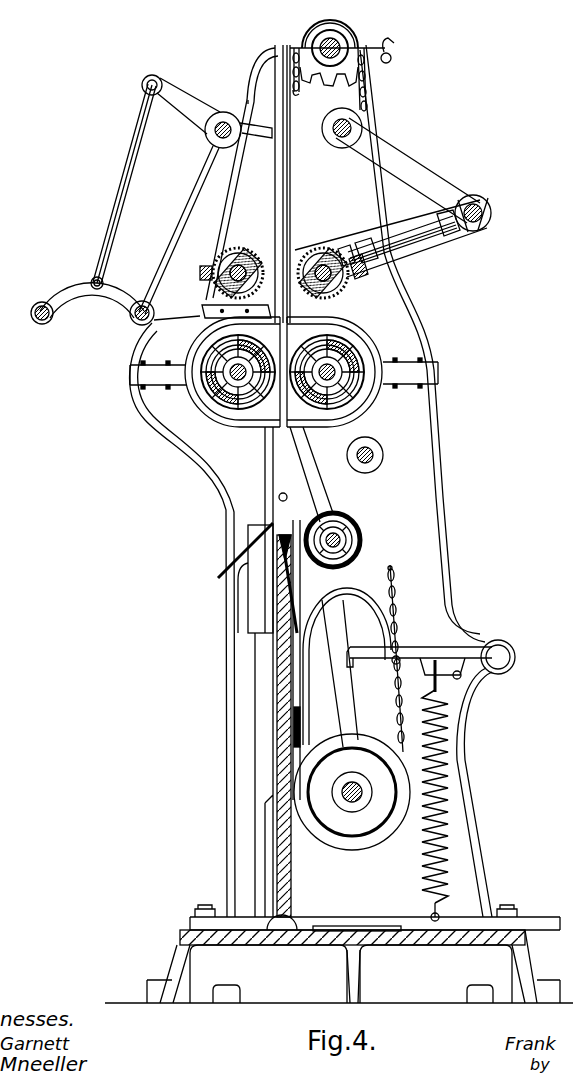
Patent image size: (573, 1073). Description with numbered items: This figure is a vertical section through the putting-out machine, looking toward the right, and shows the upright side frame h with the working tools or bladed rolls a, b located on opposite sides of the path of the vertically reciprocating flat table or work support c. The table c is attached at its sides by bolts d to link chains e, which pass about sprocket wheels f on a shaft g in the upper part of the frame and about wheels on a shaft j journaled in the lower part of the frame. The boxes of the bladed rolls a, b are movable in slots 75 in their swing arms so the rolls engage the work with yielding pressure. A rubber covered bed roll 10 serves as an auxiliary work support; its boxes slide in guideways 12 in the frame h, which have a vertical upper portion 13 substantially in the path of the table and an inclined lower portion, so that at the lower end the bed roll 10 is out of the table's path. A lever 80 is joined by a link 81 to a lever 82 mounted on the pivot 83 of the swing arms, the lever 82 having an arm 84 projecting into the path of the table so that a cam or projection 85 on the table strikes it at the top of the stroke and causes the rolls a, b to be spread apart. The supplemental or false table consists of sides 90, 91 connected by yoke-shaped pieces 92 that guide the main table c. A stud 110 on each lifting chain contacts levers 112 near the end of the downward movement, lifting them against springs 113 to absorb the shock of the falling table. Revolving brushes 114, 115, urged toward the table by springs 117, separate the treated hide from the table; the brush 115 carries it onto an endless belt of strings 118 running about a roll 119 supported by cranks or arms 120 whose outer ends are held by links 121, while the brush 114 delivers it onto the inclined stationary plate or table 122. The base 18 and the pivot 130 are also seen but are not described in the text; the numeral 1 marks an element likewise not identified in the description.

The supplemental table section 1 is at (378, 842).
The bed roll 10 is at (361, 522).
The guideways 12 is at (290, 479).
The vertical upper portion of guideway 13 is at (268, 442).
The base 18 is at (403, 935).
The slots 75 is at (208, 385).
The lever 80 is at (118, 298).
The link 81 is at (135, 147).
The lever 82 is at (190, 102).
The pivot 83 is at (212, 137).
The arm 84 is at (248, 124).
The cam or projection 85 is at (267, 833).
The side of supplemental table 90 is at (240, 556).
The side of supplemental table 91 is at (299, 567).
The yoke-shaped pieces 92 is at (248, 630).
The stud 110 is at (396, 668).
The levers 112 is at (440, 637).
The springs 113 is at (423, 858).
The revolving brush 114 is at (240, 248).
The revolving brush 115 is at (320, 248).
The springs 117 is at (200, 272).
The endless belt of strings 118 is at (425, 255).
The roll 119 is at (487, 226).
The cranks or arms 120 is at (407, 233).
The links 121 is at (420, 172).
The inclined stationary plate or table 122 is at (205, 312).
The pivot 130 is at (40, 323).
The bladed roll a is at (345, 355).
The bladed roll b is at (222, 400).
The table or work support c is at (277, 692).
The bolts d is at (307, 728).
The link chains e is at (393, 583).
The sprocket wheels f is at (318, 84).
The shaft g is at (386, 55).
The upright side frames h is at (422, 322).
The shaft j is at (360, 800).